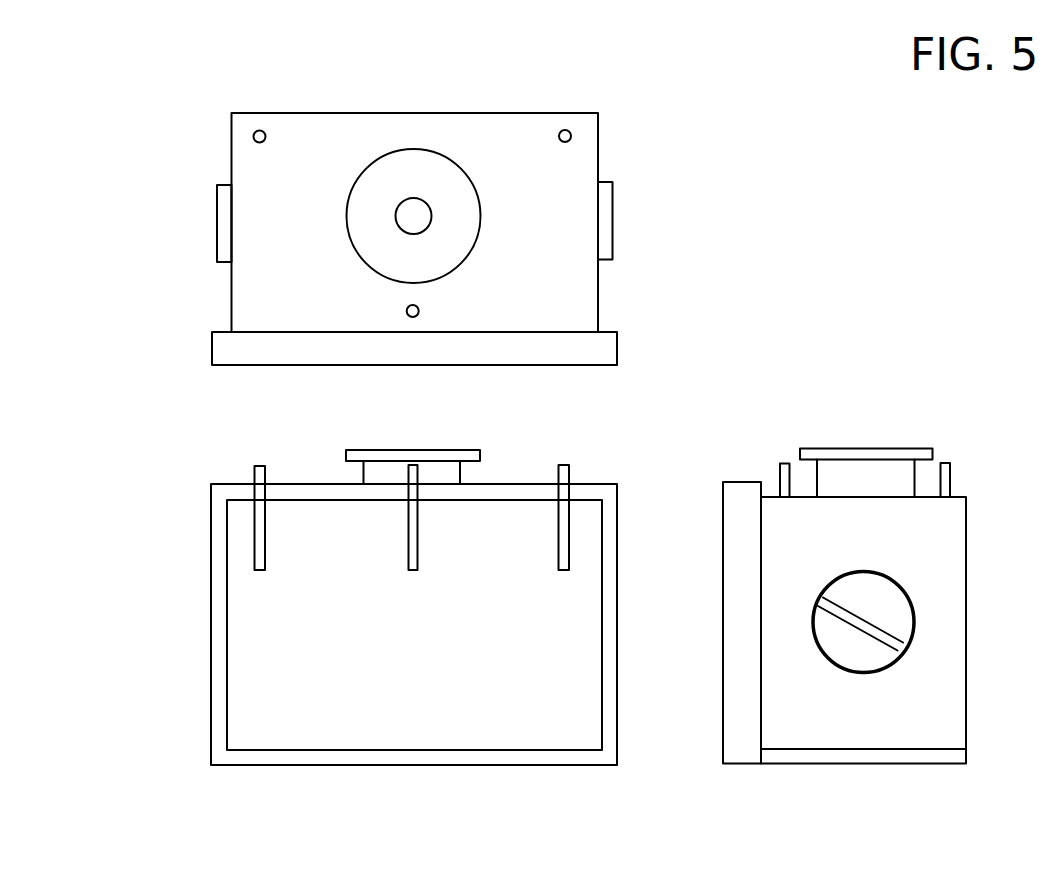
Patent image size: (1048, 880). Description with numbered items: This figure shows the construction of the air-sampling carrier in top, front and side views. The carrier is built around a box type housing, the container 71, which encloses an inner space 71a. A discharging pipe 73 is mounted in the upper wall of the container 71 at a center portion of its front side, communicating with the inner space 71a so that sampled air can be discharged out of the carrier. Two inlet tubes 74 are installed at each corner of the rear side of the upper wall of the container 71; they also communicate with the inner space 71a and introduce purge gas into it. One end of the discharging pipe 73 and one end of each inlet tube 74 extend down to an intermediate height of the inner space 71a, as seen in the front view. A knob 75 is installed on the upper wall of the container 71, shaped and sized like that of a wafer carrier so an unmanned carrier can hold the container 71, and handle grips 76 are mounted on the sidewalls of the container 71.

The container 71 is at (593, 290).
The inner space 71a is at (270, 693).
The discharging pipe 73 is at (406, 311).
The inlet tubes 74 is at (260, 127).
The knob 75 is at (408, 150).
The handle grips 76 is at (611, 193).